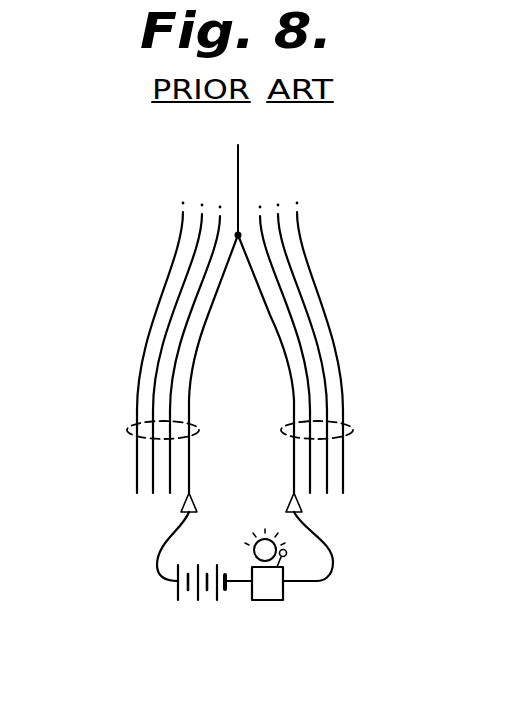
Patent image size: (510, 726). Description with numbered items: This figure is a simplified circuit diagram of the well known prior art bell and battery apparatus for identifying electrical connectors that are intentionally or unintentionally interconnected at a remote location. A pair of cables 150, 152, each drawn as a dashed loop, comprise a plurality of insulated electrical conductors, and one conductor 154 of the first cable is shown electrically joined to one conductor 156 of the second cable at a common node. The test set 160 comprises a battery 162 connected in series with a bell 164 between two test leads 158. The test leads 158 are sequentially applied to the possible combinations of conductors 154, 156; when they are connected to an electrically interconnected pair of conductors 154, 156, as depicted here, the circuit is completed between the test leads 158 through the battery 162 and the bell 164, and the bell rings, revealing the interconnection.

The cable 150 is at (130, 428).
The cable 152 is at (350, 426).
The insulated electrical conductor 154 is at (192, 385).
The insulated electrical conductor 156 is at (275, 325).
The test leads 158 is at (160, 543).
The test set 160 is at (250, 610).
The battery 162 is at (176, 608).
The bell 164 is at (283, 597).